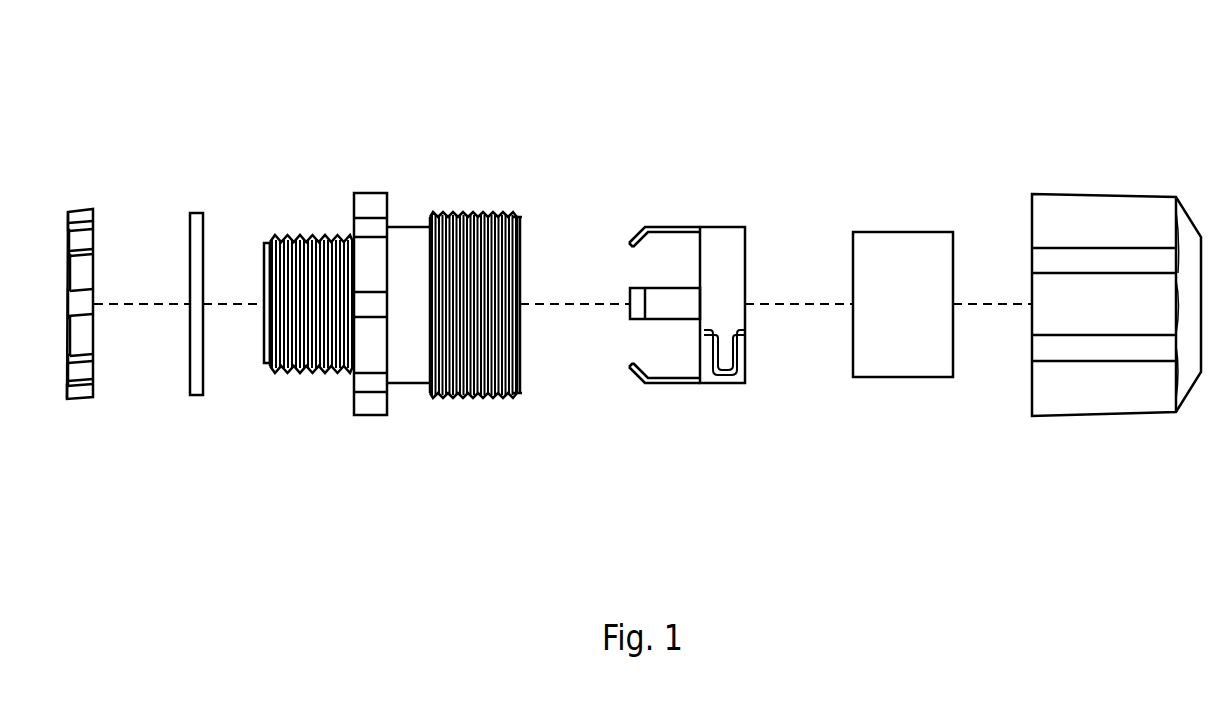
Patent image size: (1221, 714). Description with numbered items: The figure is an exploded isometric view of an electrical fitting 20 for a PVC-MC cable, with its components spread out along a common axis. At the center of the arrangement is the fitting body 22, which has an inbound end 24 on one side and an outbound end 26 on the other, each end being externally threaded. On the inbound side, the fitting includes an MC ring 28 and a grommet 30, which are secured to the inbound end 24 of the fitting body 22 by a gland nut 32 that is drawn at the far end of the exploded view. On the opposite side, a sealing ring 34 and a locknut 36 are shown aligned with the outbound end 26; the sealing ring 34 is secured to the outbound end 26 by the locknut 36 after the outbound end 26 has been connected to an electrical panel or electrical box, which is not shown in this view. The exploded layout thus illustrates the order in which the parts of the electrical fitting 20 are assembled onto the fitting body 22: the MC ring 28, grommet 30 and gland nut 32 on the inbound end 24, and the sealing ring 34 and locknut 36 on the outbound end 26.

The electrical fitting 20 is at (204, 118).
The fitting body 22 is at (409, 226).
The inbound end 24 is at (519, 350).
The outbound end 26 is at (267, 350).
The MC ring 28 is at (698, 193).
The grommet 30 is at (898, 402).
The gland nut 32 is at (1103, 416).
The sealing ring 34 is at (195, 396).
The locknut 36 is at (82, 208).